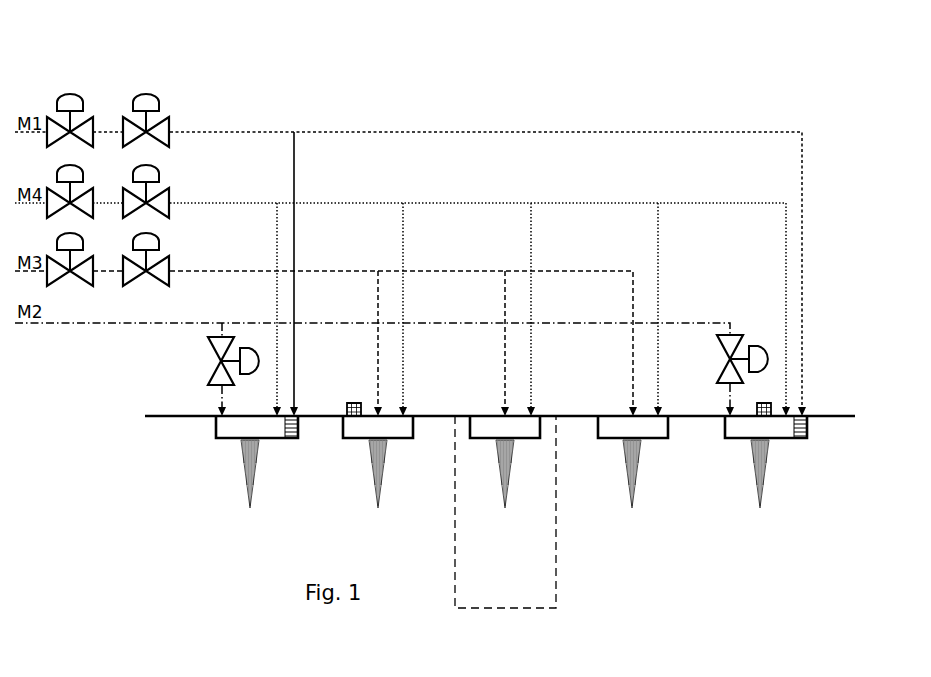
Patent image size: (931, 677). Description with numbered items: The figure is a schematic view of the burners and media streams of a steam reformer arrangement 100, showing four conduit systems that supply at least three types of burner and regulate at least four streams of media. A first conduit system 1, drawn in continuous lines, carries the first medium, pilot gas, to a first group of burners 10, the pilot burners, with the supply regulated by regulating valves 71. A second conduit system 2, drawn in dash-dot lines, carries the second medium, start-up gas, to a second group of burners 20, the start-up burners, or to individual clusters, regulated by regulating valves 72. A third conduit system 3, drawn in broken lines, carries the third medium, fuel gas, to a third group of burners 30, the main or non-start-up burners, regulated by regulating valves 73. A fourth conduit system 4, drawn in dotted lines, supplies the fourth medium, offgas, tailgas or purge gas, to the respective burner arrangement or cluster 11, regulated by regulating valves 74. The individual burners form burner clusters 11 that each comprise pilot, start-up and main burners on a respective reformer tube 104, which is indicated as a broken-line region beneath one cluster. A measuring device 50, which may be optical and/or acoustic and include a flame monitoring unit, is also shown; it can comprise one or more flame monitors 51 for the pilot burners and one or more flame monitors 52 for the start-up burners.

The steam reformer arrangement 100 is at (471, 52).
The first conduit system 1 is at (410, 262).
The second conduit system 2 is at (374, 358).
The third conduit system 3 is at (326, 331).
The fourth conduit system 4 is at (402, 297).
The regulating valves 71 is at (110, 110).
The regulating valves 74 is at (116, 189).
The regulating valves 73 is at (116, 259).
The regulating valves 72 is at (476, 360).
The burner cluster 11 is at (211, 446).
The second group of burners 20 is at (511, 462).
The third group of burners 30 is at (690, 452).
The first group of burners 10 is at (298, 438).
The measuring device 50 is at (334, 388).
The flame monitor 51 is at (774, 403).
The flame monitor 52 is at (350, 402).
The reformer tube 104 is at (505, 512).